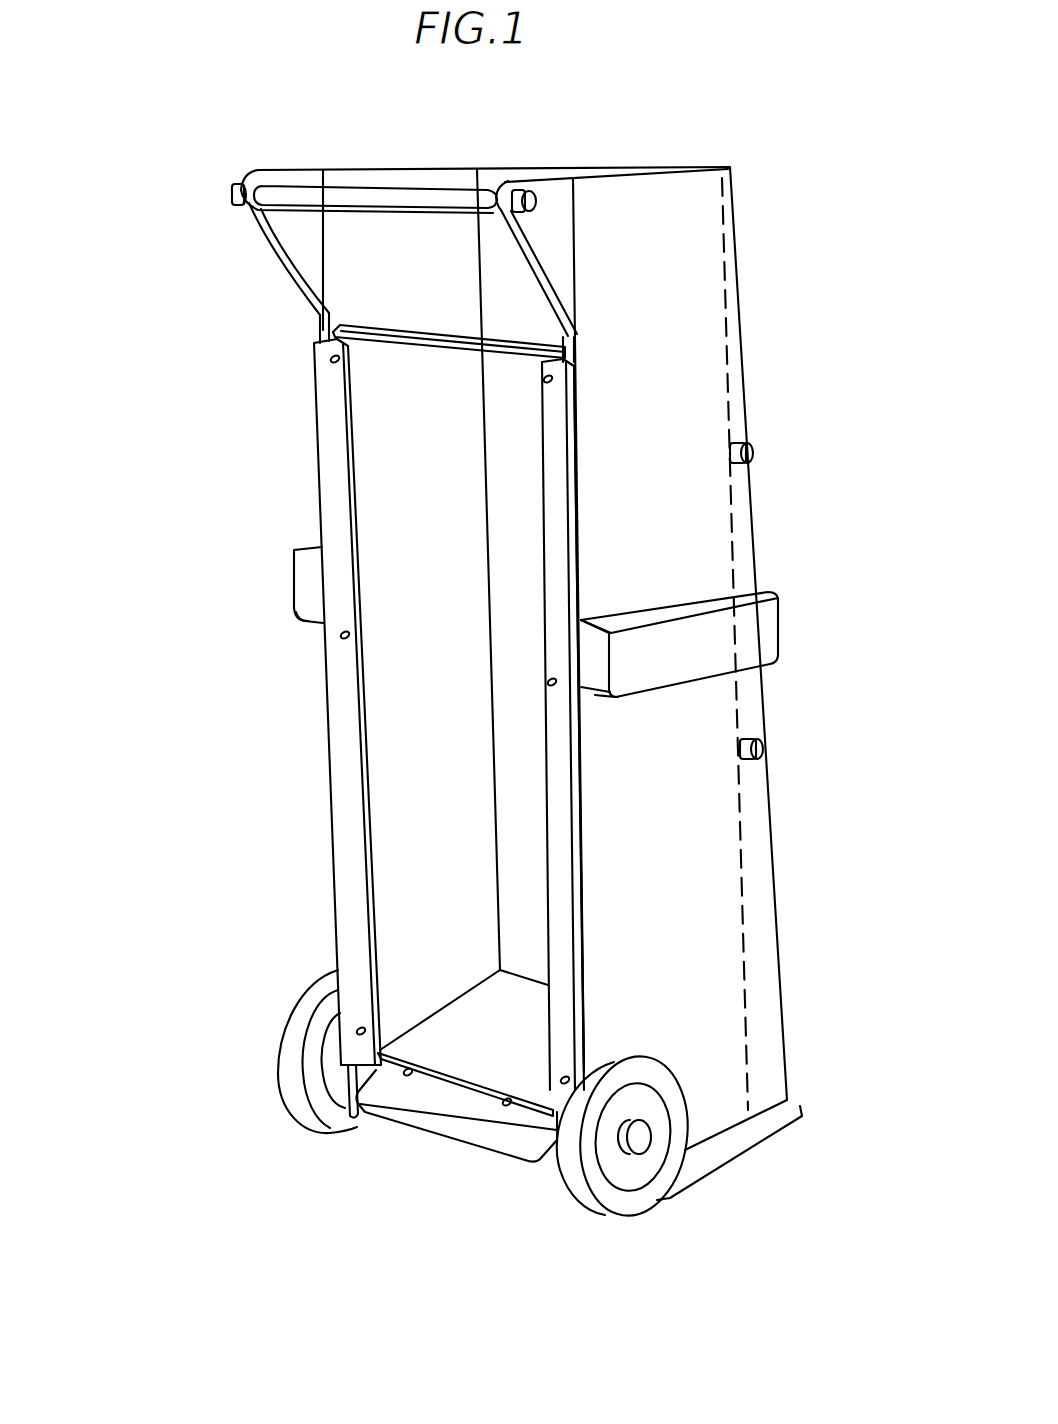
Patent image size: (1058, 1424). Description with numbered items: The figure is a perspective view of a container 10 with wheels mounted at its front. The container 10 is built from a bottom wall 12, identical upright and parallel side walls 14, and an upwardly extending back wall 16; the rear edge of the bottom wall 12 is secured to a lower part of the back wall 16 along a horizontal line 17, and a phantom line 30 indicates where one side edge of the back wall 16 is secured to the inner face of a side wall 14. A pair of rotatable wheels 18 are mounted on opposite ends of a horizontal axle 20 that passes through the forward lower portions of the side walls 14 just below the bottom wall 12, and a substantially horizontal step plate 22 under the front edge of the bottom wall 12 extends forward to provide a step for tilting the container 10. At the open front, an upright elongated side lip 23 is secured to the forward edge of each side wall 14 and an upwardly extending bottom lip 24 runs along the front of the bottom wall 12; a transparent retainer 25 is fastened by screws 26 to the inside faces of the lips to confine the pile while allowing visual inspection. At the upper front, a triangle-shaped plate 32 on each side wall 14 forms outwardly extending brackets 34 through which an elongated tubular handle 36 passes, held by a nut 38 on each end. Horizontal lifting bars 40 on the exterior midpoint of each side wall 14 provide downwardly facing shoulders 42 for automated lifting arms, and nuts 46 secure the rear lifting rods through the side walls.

The container 10 is at (675, 146).
The bottom wall 12 is at (478, 1066).
The side walls 14 is at (316, 326).
The back wall 16 is at (493, 178).
The horizontal line 17 is at (520, 978).
The rotatable wheels 18 is at (326, 1116).
The horizontal axle 20 is at (633, 1143).
The step plate 22 is at (408, 1124).
The side lip 23 is at (546, 410).
The bottom lip 24 is at (437, 1065).
The transparent retainer 25 is at (360, 328).
The screws 26 is at (333, 362).
The phantom line 30 is at (742, 818).
The triangle-shaped plate 32 is at (268, 258).
The brackets 34 is at (261, 167).
The tubular handle 36 is at (445, 213).
The nut 38 is at (230, 194).
The lifting bars 40 is at (713, 600).
The shoulders 42 is at (310, 620).
The nuts 46 is at (754, 455).